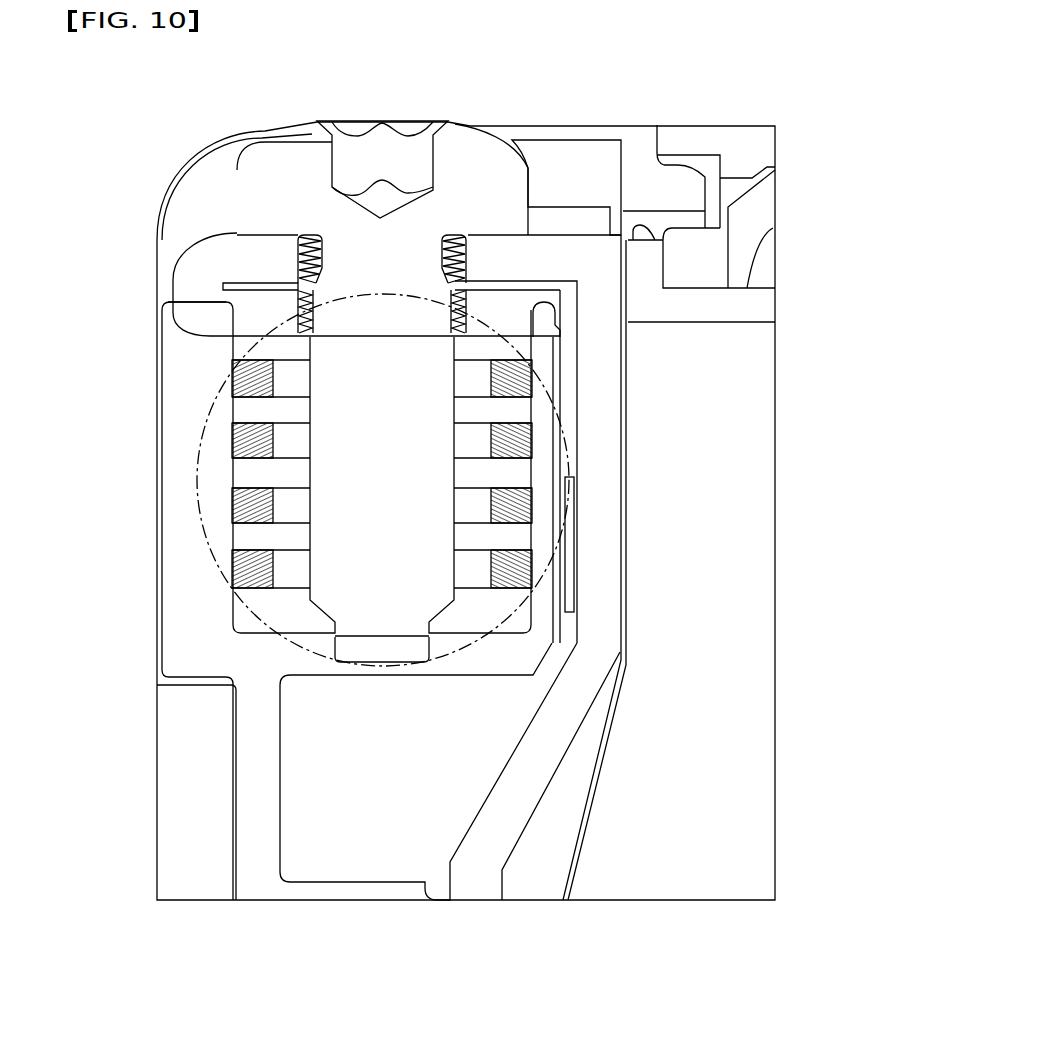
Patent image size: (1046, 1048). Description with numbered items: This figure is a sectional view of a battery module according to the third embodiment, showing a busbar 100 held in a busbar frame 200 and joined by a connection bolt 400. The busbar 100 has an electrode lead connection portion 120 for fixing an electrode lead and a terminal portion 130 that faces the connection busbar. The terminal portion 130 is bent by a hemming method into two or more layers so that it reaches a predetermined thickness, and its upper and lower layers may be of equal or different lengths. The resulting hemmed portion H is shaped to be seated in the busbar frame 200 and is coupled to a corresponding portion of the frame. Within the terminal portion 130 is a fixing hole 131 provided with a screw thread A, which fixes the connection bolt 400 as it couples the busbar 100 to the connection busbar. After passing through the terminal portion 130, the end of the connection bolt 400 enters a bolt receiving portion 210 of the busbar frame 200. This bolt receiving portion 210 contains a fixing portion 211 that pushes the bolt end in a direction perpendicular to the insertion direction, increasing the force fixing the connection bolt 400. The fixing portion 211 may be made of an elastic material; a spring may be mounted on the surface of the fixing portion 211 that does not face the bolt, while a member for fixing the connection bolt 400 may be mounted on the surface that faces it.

The busbar 100 is at (547, 511).
The electrode lead connection portion 120 is at (612, 440).
The terminal portion 130 is at (673, 230).
The fixing hole 131 is at (567, 357).
The busbar frame 200 is at (178, 217).
The bolt receiving portion 210 is at (508, 609).
The fixing portion 211 is at (265, 585).
The connection bolt 400 is at (470, 124).
The screw thread A is at (467, 273).
The hemmed portion H is at (180, 298).